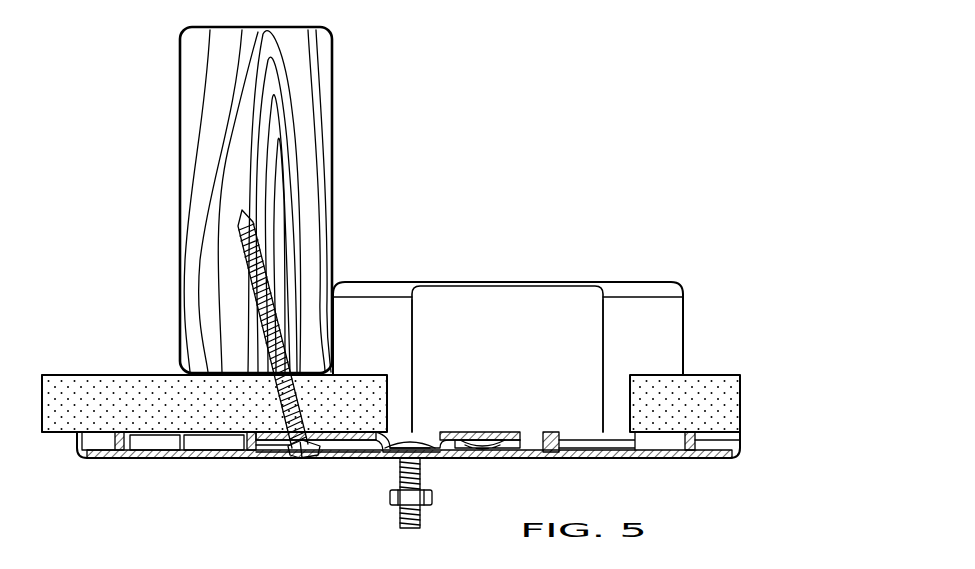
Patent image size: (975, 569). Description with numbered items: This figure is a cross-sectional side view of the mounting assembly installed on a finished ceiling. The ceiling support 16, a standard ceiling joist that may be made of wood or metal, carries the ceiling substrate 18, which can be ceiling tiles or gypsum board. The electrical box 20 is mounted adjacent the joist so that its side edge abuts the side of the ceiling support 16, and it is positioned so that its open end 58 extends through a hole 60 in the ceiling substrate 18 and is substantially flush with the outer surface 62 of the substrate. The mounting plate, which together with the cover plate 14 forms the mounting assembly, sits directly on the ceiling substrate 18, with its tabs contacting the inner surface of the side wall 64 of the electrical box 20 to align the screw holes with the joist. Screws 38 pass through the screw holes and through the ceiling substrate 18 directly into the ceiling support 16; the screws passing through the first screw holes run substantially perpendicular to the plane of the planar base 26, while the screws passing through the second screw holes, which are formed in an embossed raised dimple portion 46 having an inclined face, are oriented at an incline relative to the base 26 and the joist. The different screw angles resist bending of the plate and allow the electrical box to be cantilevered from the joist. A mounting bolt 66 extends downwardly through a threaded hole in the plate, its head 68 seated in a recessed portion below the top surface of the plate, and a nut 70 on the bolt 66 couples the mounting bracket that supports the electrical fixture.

The cover plate 14 is at (97, 463).
The ceiling support 16 is at (180, 212).
The ceiling substrate 18 is at (93, 373).
The electrical box 20 is at (686, 284).
The planar base 26 is at (376, 441).
The screws 38 is at (267, 262).
The embossed raised dimple portion 46 is at (290, 449).
The open end 58 is at (580, 432).
The hole 60 is at (625, 372).
The outer surface 62 is at (56, 433).
The side wall 64 is at (373, 323).
The mounting bolt 66 is at (421, 514).
The head 68 is at (410, 442).
The nuts 70 is at (433, 497).